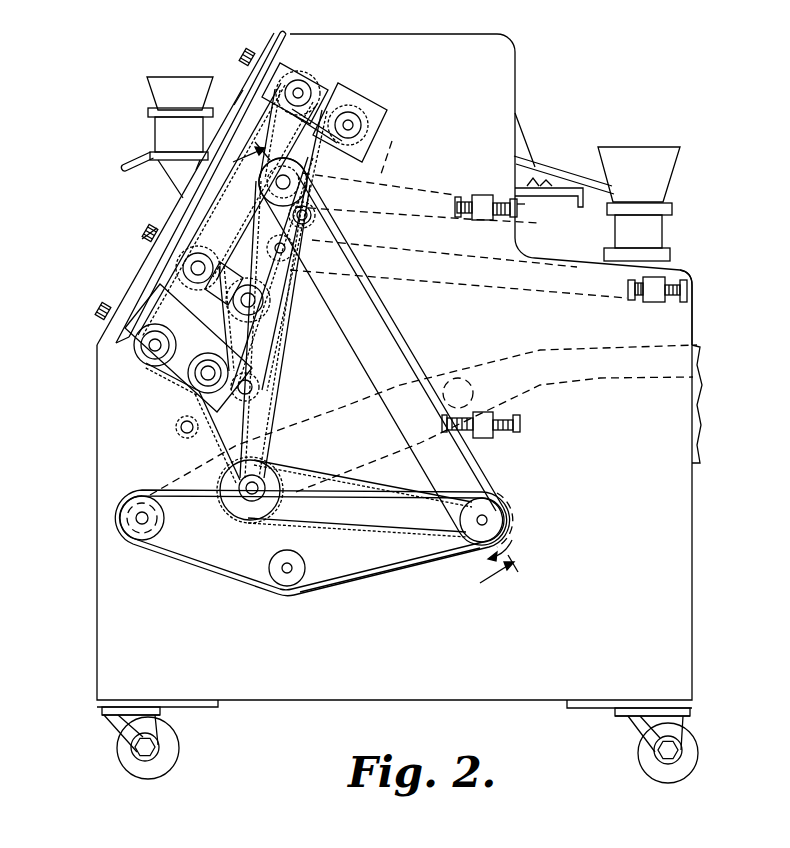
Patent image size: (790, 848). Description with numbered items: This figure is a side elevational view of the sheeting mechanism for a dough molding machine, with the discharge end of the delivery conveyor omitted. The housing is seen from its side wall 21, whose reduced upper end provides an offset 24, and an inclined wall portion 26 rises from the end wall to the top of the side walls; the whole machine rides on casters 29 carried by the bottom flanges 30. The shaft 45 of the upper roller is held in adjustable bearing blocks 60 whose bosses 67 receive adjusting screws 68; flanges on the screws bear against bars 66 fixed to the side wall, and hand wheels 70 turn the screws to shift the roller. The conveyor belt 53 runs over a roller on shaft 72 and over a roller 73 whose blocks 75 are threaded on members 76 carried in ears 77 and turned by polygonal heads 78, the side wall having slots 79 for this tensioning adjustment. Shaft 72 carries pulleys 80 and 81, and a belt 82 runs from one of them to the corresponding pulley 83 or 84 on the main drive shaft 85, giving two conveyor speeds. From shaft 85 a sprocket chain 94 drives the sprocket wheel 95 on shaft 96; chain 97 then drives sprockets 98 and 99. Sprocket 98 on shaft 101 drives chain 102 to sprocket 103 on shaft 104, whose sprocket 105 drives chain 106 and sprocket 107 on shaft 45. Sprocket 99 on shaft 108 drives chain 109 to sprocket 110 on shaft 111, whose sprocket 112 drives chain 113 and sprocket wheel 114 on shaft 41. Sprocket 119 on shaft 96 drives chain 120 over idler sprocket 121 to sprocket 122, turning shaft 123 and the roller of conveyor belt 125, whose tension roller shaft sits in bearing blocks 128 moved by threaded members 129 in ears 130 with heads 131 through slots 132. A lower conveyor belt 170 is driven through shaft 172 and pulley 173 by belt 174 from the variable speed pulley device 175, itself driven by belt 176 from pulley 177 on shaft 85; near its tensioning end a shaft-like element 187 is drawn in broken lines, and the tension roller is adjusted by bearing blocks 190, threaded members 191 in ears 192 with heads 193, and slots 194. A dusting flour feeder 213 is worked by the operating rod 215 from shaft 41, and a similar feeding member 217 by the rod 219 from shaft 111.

The side wall 21 is at (123, 600).
The offset 24 is at (575, 263).
The inclined wall portion 26 is at (235, 100).
The caster 29 is at (172, 742).
The bottom flange 30 is at (217, 704).
The shaft 41 is at (355, 128).
The shaft 45 is at (320, 82).
The conveyor belt 53 is at (378, 161).
The adjustable bearing block 60 is at (291, 72).
The bar 66 is at (238, 84).
The boss 67 is at (290, 32).
The adjusting screw 68 is at (128, 331).
The hand wheel 70 is at (250, 52).
The shaft 72 is at (278, 172).
The roller 73 is at (483, 193).
The block 75 is at (491, 195).
The screw-threaded member 76 is at (462, 193).
The ear 77 is at (462, 195).
The polygonal head 78 is at (455, 206).
The slot 79 is at (497, 220).
The pulley 80 is at (296, 172).
The pulley 81 is at (258, 180).
The belt 82 is at (407, 338).
The pulley 83 is at (483, 505).
The pulley 84 is at (507, 492).
The main drive shaft 85 is at (510, 528).
The sprocket chain 94 is at (333, 473).
The sprocket wheel 95 is at (287, 490).
The shaft 96 is at (215, 475).
The sprocket chain 97 is at (193, 450).
The sprocket 98 is at (150, 356).
The sprocket 99 is at (180, 396).
The shaft 101 is at (125, 343).
The sprocket chain 102 is at (138, 284).
The sprocket 103 is at (172, 277).
The shaft 104 is at (195, 268).
The sprocket 105 is at (147, 226).
The sprocket chain 106 is at (212, 200).
The sprocket 107 is at (300, 92).
The shaft 108 is at (265, 358).
The sprocket chain 109 is at (263, 343).
The sprocket 110 is at (281, 320).
The shaft 111 is at (282, 297).
The sprocket 112 is at (288, 282).
The sprocket chain 113 is at (334, 193).
The sprocket wheel 114 is at (352, 123).
The sprocket 119 is at (287, 428).
The sprocket chain 120 is at (293, 387).
The idler sprocket 121 is at (330, 223).
The sprocket 122 is at (262, 239).
The shaft 123 is at (300, 250).
The conveyor belt 125 is at (455, 242).
The bearing block 128 is at (656, 303).
The screw-threaded member 129 is at (675, 283).
The ear 130 is at (630, 286).
The head 131 is at (626, 300).
The slot 132 is at (674, 303).
The conveyor belt 170 is at (490, 357).
The shaft 172 is at (140, 518).
The pulley 173 is at (118, 497).
The belt 174 is at (190, 570).
The variable speed pulley device 175 is at (300, 593).
The belt 176 is at (393, 568).
The pulley 177 is at (480, 547).
The shaft 187 is at (472, 396).
The bearing block 190 is at (485, 440).
The screw-threaded member 191 is at (512, 408).
The ear 192 is at (518, 417).
The head 193 is at (523, 427).
The slot 194 is at (510, 438).
The dusting flour feeder 213 is at (650, 229).
The operating rod 215 is at (553, 167).
The dusting flour feeding member 217 is at (165, 135).
The rod 219 is at (162, 182).